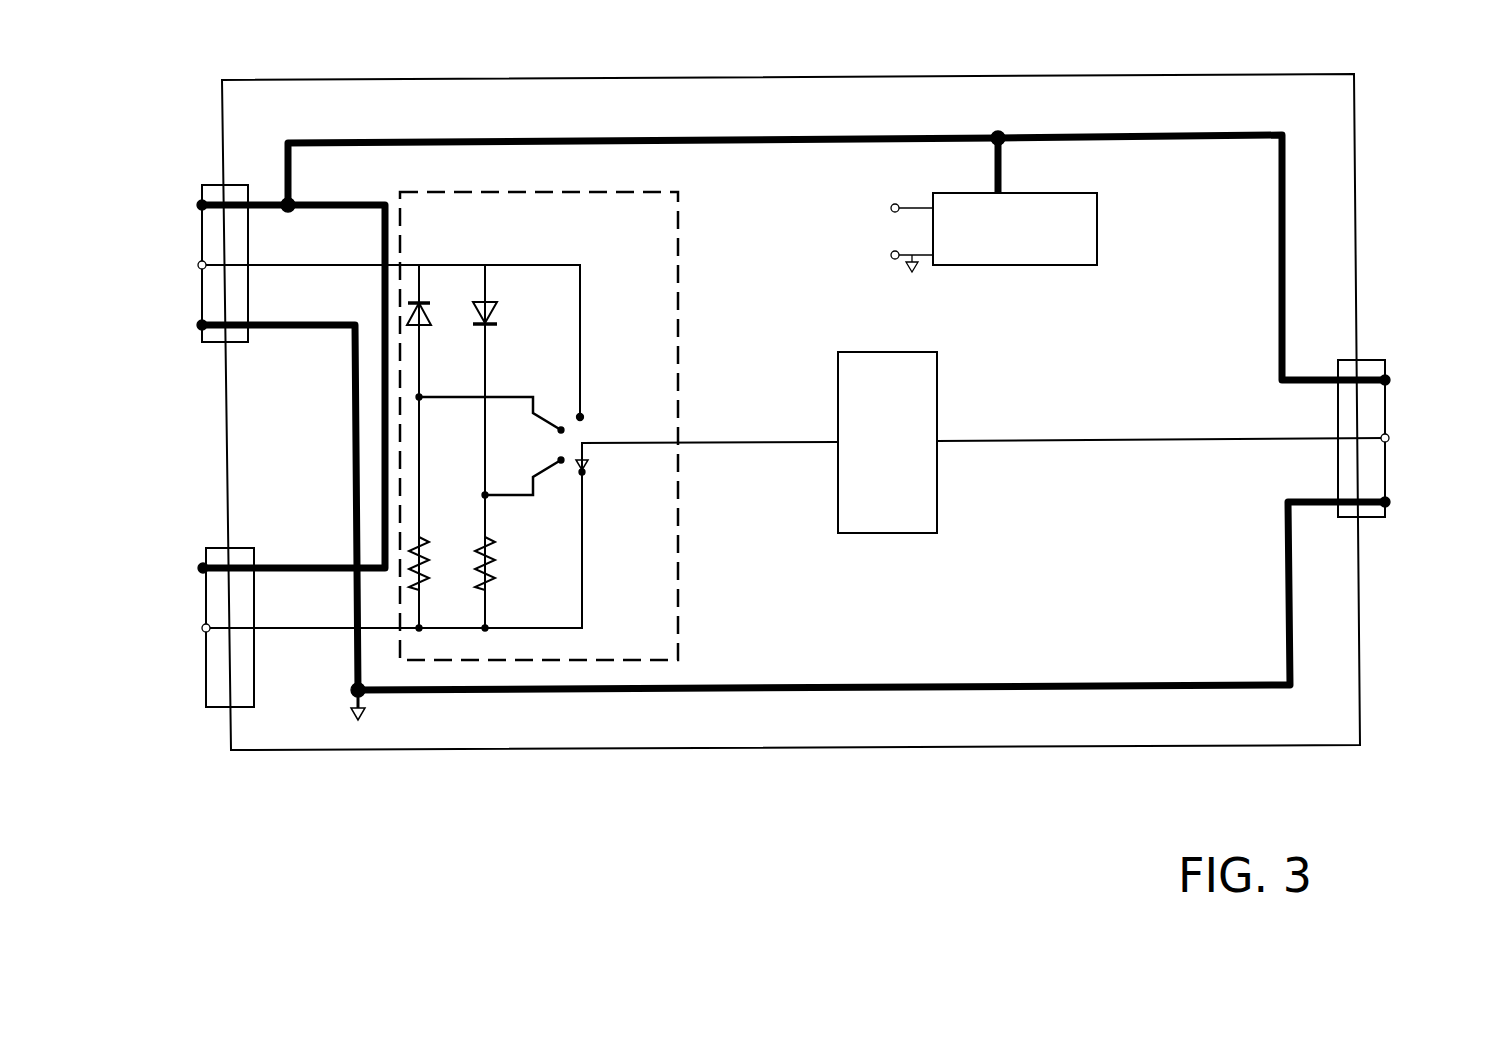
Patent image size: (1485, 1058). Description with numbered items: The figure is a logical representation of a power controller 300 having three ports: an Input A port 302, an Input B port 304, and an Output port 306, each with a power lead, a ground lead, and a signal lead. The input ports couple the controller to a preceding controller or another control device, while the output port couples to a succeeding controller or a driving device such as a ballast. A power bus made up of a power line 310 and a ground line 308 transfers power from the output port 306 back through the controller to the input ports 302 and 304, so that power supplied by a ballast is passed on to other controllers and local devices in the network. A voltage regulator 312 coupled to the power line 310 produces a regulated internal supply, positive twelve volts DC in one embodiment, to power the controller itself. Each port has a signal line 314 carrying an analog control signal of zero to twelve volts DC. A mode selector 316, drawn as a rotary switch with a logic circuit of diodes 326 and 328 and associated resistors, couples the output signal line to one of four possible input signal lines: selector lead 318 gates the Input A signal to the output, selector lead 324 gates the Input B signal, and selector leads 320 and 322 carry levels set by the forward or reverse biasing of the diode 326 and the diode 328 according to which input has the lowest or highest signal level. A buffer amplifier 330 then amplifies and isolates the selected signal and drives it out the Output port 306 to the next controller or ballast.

The power controller 300 is at (708, 794).
The Input A port 302 is at (238, 185).
The Input B port 304 is at (220, 545).
The Output port 306 is at (1337, 405).
The ground line 308 is at (1075, 682).
The power line 310 is at (1232, 140).
The voltage regulator 312 is at (996, 258).
The signal line 314 is at (344, 268).
The mode selector 316 is at (680, 375).
The selector lead 318 is at (582, 400).
The selector lead 320 is at (555, 421).
The selector lead 322 is at (562, 465).
The selector lead 324 is at (586, 478).
The diode 326 is at (424, 300).
The diode 328 is at (487, 300).
The buffer amplifier 330 is at (868, 470).